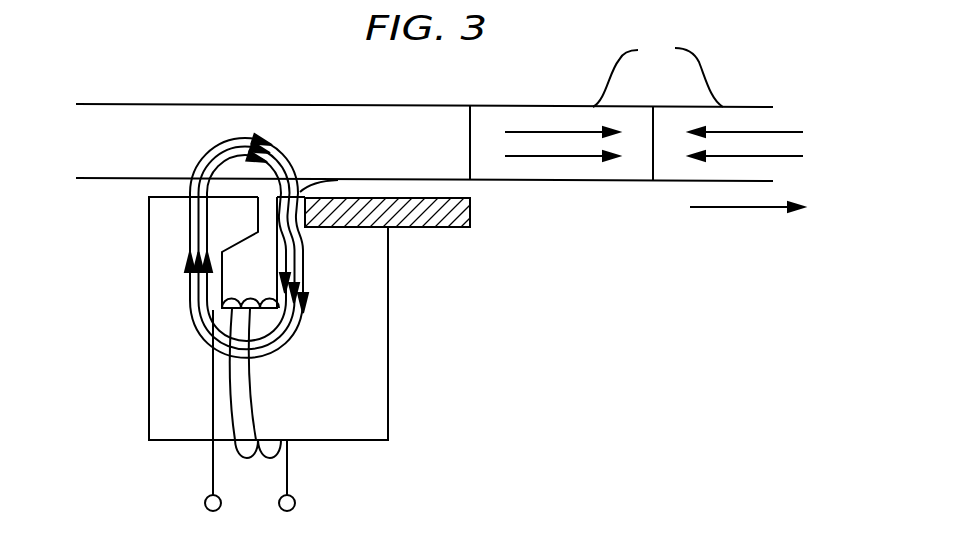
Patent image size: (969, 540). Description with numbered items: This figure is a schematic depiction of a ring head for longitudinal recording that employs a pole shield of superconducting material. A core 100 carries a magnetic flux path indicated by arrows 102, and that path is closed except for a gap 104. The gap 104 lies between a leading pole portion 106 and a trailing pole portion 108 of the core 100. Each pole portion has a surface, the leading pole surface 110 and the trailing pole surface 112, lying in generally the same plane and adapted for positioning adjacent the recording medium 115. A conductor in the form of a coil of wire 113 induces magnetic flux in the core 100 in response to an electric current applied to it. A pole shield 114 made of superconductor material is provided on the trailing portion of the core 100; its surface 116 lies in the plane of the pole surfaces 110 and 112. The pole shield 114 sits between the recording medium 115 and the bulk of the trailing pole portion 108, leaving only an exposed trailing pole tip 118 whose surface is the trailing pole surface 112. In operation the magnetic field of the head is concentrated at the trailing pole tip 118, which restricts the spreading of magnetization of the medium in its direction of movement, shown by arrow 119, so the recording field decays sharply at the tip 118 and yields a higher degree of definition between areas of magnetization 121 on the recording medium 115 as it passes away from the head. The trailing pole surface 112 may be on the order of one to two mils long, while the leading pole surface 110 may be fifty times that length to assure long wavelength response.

The core 100 is at (368, 398).
The magnetic flux path arrows 102 is at (205, 313).
The gap 104 is at (215, 176).
The leading pole portion 106 is at (186, 245).
The trailing pole portion 108 is at (368, 285).
The leading pole surface 110 is at (190, 197).
The trailing pole surface 112 is at (338, 180).
The coil of wire 113 is at (262, 456).
The pole shield 114 is at (422, 227).
The recording medium 115 is at (440, 164).
The pole shield surface 116 is at (470, 199).
The trailing pole tip 118 is at (305, 178).
The arrow indicating direction of medium movement 119 is at (735, 207).
The areas of magnetization 121 is at (658, 73).